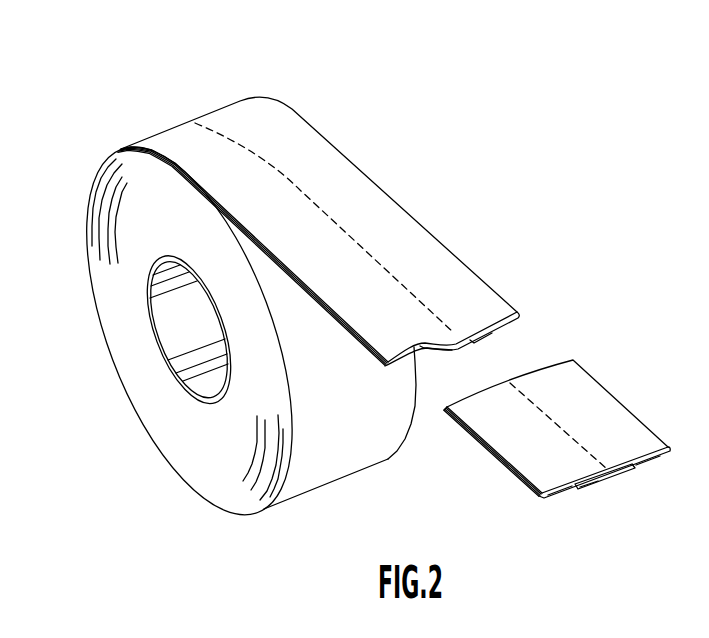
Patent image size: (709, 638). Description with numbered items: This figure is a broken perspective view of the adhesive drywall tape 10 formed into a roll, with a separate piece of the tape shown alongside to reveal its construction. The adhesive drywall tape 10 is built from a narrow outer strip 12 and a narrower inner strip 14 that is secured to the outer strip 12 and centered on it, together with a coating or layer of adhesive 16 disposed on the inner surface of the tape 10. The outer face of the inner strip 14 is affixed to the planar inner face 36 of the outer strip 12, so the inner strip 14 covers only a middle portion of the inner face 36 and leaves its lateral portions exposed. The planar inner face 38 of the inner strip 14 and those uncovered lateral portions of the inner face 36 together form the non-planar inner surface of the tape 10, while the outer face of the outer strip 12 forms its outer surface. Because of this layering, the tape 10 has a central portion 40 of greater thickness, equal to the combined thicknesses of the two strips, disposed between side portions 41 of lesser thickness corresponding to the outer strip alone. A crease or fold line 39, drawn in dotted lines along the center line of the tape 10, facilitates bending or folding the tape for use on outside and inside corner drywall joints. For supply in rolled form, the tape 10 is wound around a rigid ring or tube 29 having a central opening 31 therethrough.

The adhesive drywall tape 10 is at (328, 102).
The outer strip 12 is at (591, 369).
The inner strip 14 is at (625, 484).
The adhesive 16 is at (656, 472).
The rigid ring or tube 29 is at (173, 378).
The central opening 31 is at (175, 329).
The inner face of outer strip 36 is at (550, 500).
The inner face of inner strip 38 is at (593, 490).
The crease or fold line 39 is at (327, 220).
The central portion 40 is at (605, 467).
The side portions 41 is at (643, 457).